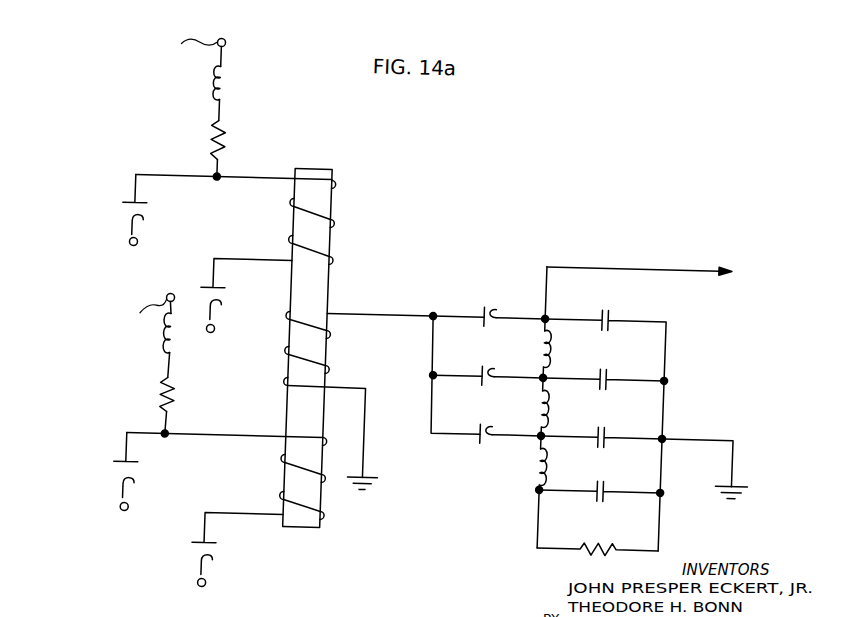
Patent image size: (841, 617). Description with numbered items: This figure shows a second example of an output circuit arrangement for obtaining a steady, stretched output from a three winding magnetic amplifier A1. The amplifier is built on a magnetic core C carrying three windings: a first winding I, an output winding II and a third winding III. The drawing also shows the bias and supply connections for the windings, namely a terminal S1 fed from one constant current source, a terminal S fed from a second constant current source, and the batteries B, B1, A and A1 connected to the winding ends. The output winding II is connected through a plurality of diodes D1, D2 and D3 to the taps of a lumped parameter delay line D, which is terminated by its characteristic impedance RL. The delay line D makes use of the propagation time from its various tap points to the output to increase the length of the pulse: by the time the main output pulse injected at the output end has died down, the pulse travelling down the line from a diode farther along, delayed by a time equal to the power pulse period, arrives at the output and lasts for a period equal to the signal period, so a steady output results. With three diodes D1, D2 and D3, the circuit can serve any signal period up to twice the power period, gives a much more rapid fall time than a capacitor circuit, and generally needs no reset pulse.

The upper constant current source terminal S1 is at (161, 92).
The lower constant current source terminal S is at (113, 354).
The bias battery B is at (134, 221).
The bias battery B1 is at (245, 307).
The bias battery A is at (124, 482).
The three winding magnetic amplifier A1 is at (373, 304).
The first winding I is at (302, 222).
The output winding II is at (342, 401).
The third winding III is at (287, 478).
The magnetic core C is at (310, 530).
The lumped parameter delay line D is at (700, 364).
The diode D1 is at (493, 329).
The diode D2 is at (491, 386).
The diode D3 is at (489, 445).
The characteristic impedance RL is at (598, 537).